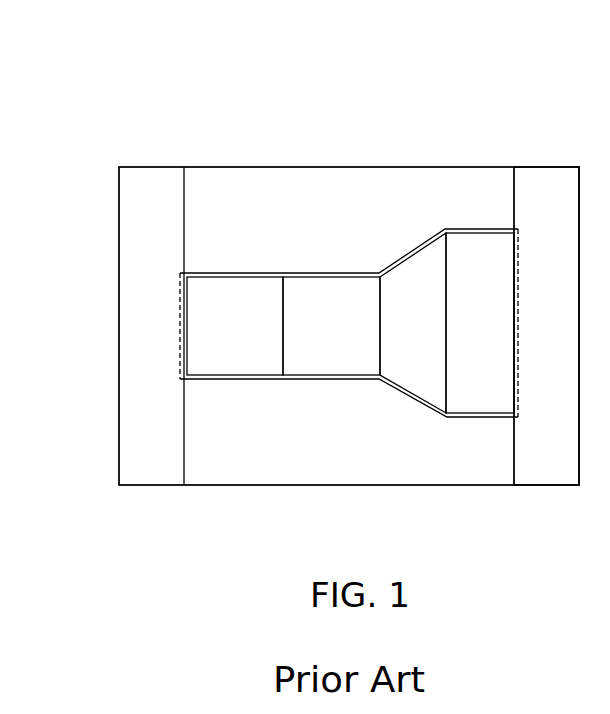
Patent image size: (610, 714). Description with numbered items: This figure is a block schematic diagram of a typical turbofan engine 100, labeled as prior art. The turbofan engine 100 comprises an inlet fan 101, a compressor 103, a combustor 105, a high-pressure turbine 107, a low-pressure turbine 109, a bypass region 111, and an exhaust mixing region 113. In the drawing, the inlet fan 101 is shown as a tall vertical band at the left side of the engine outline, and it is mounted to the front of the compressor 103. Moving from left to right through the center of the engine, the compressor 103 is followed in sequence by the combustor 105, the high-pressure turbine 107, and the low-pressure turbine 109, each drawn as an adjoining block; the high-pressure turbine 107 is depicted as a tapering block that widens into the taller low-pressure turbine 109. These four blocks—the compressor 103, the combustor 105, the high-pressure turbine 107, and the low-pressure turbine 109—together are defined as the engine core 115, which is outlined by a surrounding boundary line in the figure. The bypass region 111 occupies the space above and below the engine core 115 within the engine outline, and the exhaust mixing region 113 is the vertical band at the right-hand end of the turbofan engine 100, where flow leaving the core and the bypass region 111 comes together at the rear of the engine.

The turbofan engine 100 is at (100, 118).
The inlet fan 101 is at (163, 485).
The compressor 103 is at (247, 334).
The combustor 105 is at (345, 333).
The high-pressure turbine 107 is at (429, 333).
The low-pressure turbine 109 is at (497, 333).
The bypass region 111 is at (299, 216).
The exhaust mixing region 113 is at (567, 333).
The engine core 115 is at (445, 416).